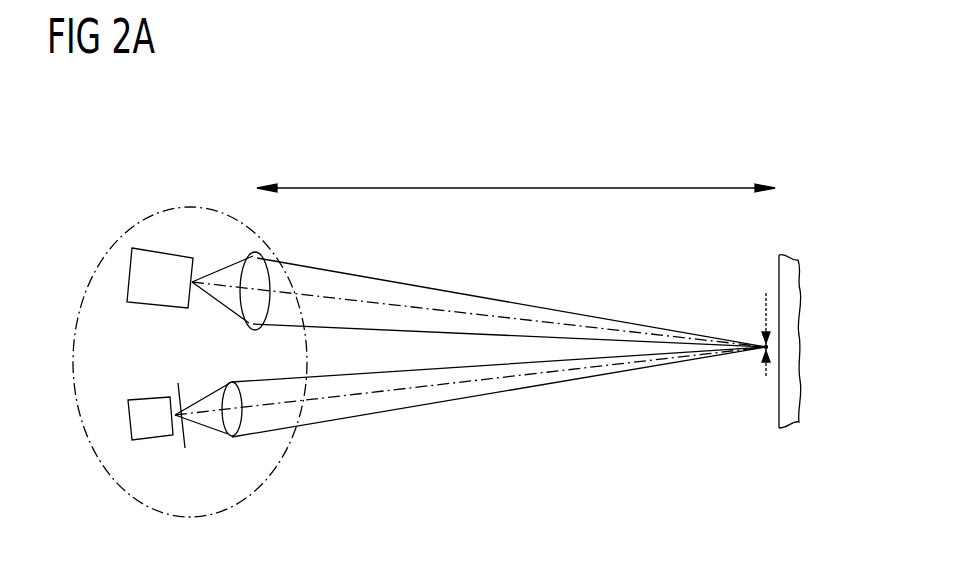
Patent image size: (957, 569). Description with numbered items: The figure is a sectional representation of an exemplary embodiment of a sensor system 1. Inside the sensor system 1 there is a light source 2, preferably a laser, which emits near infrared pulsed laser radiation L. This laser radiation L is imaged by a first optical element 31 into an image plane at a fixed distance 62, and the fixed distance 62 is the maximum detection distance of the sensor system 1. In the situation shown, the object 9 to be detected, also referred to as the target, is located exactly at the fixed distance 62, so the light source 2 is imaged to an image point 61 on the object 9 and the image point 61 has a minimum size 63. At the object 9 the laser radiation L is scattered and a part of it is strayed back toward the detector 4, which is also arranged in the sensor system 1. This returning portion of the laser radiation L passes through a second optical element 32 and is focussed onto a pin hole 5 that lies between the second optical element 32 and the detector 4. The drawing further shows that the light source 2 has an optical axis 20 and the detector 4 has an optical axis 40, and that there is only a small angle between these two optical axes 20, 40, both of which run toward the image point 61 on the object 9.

The sensor system 1 is at (100, 462).
The light source 2 is at (139, 300).
The detector 4 is at (132, 400).
The pin hole 5 is at (182, 394).
The object 9 is at (790, 278).
The optical axis of the light source 20 is at (508, 318).
The first optical element 31 is at (256, 258).
The second optical element 32 is at (231, 435).
The optical axis of the detector 40 is at (487, 381).
The image point 61 is at (779, 347).
The fixed distance 62 is at (497, 187).
The minimum size 63 is at (758, 305).
The laser radiation L is at (388, 283).